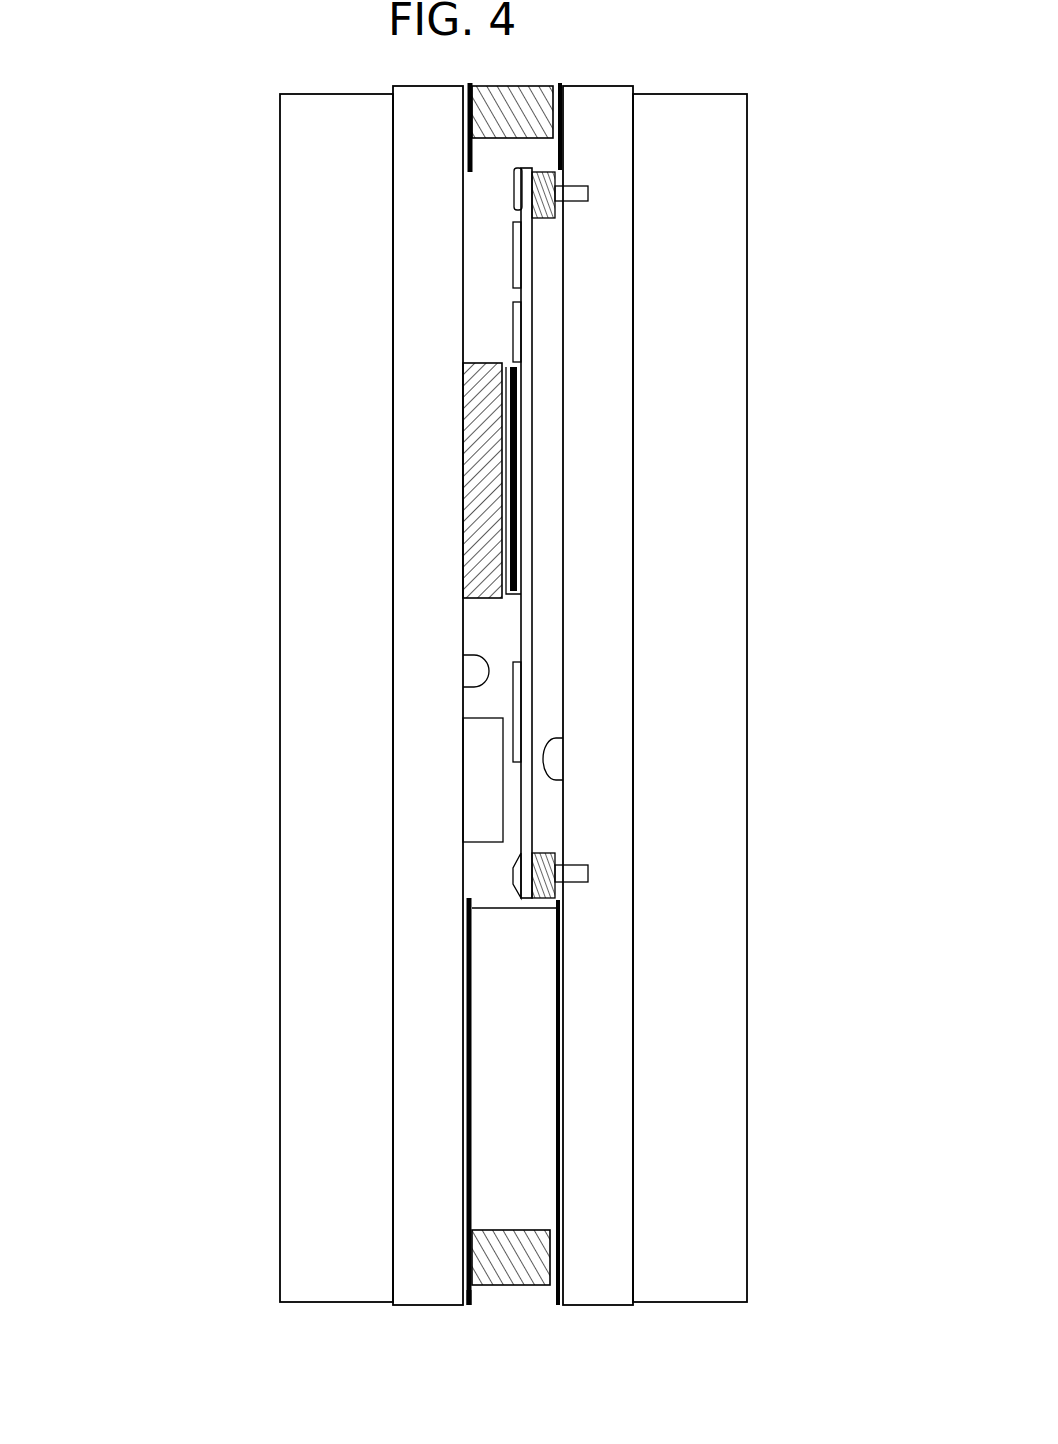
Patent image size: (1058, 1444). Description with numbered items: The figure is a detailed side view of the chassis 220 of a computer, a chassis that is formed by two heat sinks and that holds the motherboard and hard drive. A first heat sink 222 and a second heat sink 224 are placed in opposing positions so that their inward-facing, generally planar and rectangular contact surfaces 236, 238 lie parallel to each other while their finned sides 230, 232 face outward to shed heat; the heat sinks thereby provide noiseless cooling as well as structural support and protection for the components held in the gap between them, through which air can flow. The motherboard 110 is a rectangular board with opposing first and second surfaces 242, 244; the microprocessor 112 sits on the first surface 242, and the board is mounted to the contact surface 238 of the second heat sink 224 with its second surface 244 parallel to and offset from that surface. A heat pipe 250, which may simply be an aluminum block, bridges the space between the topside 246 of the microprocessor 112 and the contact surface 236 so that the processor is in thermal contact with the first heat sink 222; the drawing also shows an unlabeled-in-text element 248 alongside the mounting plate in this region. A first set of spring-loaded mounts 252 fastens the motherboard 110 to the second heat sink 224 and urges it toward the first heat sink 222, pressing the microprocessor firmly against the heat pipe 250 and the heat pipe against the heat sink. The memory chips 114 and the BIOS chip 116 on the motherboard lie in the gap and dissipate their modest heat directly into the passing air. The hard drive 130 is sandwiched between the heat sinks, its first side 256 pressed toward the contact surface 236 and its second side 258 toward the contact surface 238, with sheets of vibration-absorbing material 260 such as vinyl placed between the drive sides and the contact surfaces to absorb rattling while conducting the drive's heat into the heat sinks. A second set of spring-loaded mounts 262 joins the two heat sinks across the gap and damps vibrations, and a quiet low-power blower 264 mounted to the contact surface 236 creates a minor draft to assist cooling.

The chassis 220 is at (216, 77).
The first heat sink 222 is at (340, 93).
The second heat sink 224 is at (693, 94).
The side with heat fins 230 is at (280, 820).
The side with heat fins 232 is at (720, 708).
The contact surface 236 is at (463, 655).
The contact surface 238 is at (563, 776).
The first surface 242 is at (514, 212).
The second surface 244 is at (533, 265).
The topside of the microprocessor 246 is at (508, 363).
The resilient strip 248 is at (514, 383).
The heat pipe 250 is at (477, 430).
The spring-loaded mounts 252 is at (565, 190).
The first side 256 is at (467, 985).
The second side 258 is at (562, 935).
The vibration-absorbing material 260 is at (468, 1305).
The spring-loaded mounts 262 is at (540, 83).
The low-power blower 264 is at (473, 818).
The motherboard 110 is at (519, 608).
The microprocessor 112 is at (517, 487).
The memory chips 114 is at (513, 703).
The BIOS chip 116 is at (513, 253).
The hard drive 130 is at (490, 1005).